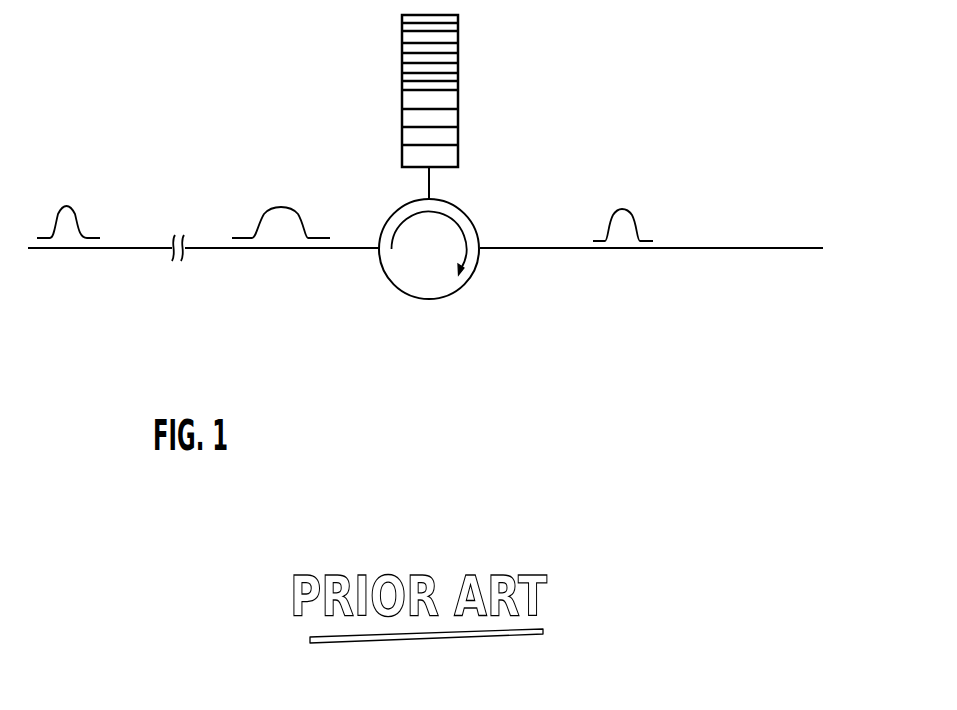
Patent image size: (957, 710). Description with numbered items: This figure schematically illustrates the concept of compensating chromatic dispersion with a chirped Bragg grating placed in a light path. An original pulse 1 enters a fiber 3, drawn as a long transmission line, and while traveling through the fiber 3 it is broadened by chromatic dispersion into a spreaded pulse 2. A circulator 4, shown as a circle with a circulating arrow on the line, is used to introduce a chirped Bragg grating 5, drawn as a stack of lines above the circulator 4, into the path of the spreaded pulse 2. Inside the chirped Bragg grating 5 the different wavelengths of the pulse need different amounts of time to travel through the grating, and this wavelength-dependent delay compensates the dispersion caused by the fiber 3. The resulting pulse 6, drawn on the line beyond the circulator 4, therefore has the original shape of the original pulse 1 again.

The original pulse 1 is at (67, 205).
The spreaded pulse 2 is at (282, 207).
The fiber 3 is at (118, 248).
The circulator 4 is at (445, 297).
The chirped Bragg grating 5 is at (458, 115).
The resulting pulse 6 is at (622, 208).